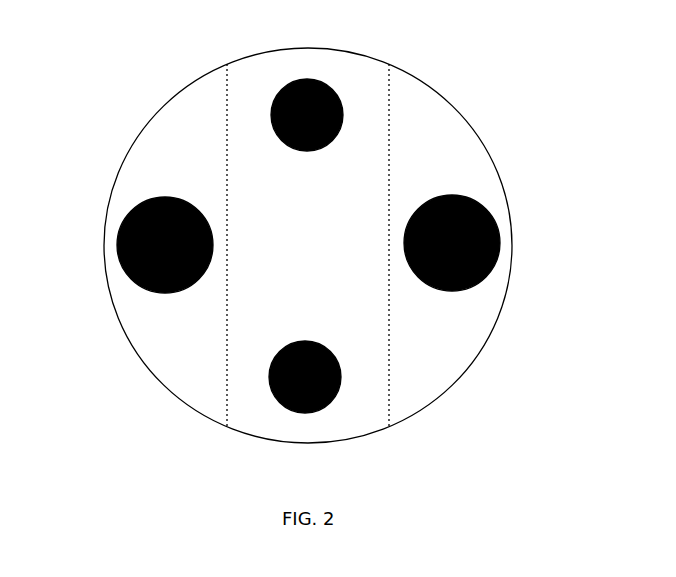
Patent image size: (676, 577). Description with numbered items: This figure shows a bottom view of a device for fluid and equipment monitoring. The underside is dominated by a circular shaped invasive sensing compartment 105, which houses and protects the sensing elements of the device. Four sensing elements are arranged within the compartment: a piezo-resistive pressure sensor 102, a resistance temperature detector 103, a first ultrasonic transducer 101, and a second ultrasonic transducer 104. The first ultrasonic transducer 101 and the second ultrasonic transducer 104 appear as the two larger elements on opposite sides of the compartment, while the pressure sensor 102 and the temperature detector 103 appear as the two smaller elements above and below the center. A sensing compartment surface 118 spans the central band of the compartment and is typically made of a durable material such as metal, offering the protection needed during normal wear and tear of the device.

The first ultrasonic transducer 101 is at (117, 239).
The piezo-resistive pressure sensor 102 is at (305, 413).
The resistance temperature detector 103 is at (307, 80).
The second ultrasonic transducer 104 is at (513, 243).
The invasive sensing compartment 105 is at (132, 149).
The sensing compartment surface 118 is at (358, 66).